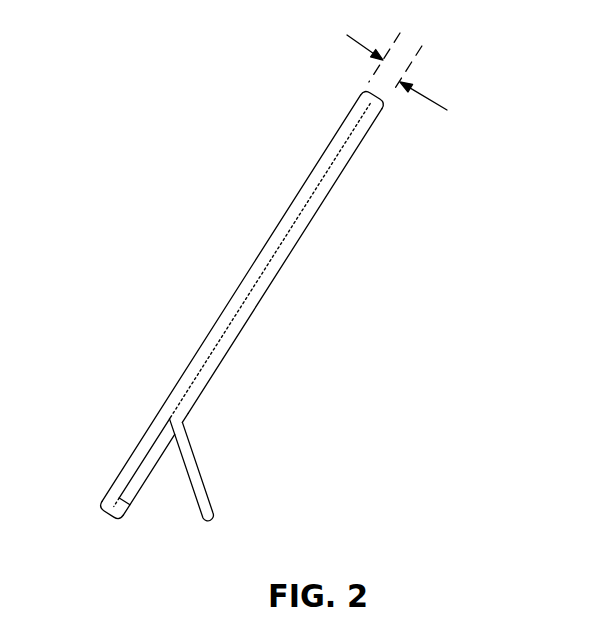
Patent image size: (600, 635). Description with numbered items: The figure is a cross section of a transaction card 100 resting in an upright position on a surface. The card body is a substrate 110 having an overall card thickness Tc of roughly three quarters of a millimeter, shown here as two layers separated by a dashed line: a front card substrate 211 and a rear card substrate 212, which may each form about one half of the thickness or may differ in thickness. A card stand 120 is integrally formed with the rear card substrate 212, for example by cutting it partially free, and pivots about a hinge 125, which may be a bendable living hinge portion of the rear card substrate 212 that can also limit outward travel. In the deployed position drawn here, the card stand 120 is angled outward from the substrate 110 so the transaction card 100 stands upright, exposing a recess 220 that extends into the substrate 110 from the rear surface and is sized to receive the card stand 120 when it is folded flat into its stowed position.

The transaction card 100 is at (189, 312).
The substrate 110 is at (96, 510).
The card stand 120 is at (212, 508).
The hinge 125 is at (183, 422).
The front card substrate 211 is at (319, 160).
The rear card substrate 212 is at (309, 223).
The recess 220 is at (137, 493).